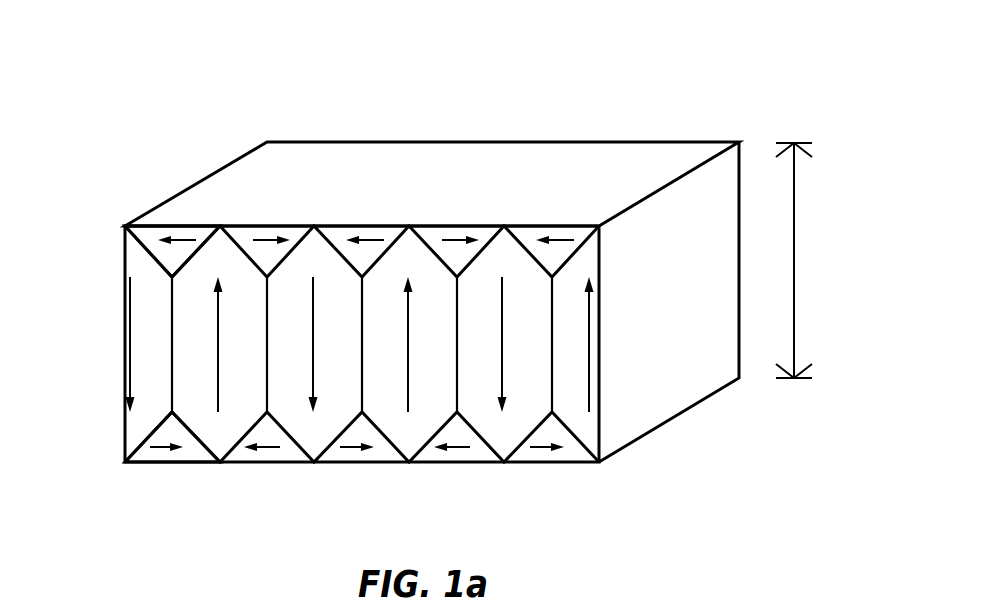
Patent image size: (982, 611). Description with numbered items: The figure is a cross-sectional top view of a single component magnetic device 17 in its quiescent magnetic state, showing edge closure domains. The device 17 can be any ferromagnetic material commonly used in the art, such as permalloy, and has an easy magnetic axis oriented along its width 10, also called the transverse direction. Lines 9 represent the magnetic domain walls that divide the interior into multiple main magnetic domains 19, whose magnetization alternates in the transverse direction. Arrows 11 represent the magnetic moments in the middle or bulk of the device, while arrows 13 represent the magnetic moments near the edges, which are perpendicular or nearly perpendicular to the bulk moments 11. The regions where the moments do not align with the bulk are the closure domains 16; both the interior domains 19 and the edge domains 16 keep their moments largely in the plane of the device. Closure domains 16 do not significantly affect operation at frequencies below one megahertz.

The single component magnetic device 17 is at (409, 113).
The width 10 is at (794, 260).
The main magnetic domains 19 is at (173, 278).
The closure domains 16 is at (172, 437).
The magnetic domain walls 9 is at (265, 373).
The magnetic moments in the bulk 11 is at (312, 360).
The magnetic moments near the edges 13 is at (543, 447).